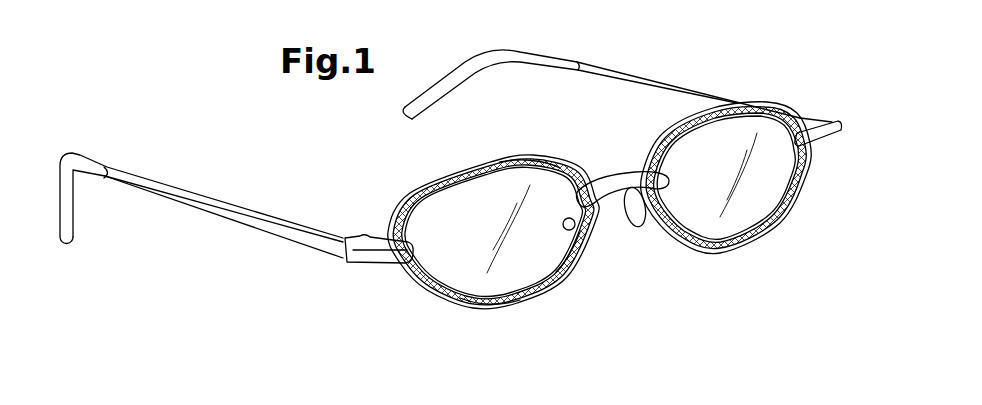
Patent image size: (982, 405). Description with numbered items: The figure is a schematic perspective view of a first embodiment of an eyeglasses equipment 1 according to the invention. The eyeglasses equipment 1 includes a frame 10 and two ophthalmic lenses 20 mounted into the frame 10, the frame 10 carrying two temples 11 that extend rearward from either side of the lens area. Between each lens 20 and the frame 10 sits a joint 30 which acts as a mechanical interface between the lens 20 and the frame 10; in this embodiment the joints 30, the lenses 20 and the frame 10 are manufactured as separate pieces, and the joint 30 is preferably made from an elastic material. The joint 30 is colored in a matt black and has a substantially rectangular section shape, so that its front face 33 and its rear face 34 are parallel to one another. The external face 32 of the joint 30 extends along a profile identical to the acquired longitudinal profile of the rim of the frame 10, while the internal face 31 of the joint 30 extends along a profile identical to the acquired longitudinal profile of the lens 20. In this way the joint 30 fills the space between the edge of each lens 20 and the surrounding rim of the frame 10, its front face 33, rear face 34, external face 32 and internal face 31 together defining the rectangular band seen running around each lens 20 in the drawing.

The eyeglasses equipment 1 is at (312, 318).
The frame 10 is at (626, 60).
The temple 11 is at (247, 213).
The ophthalmic lens 20 is at (522, 272).
The joint 30 is at (468, 308).
The internal face 31 is at (562, 193).
The external face 32 is at (516, 302).
The front face 33 is at (570, 243).
The rear face 34 is at (534, 268).